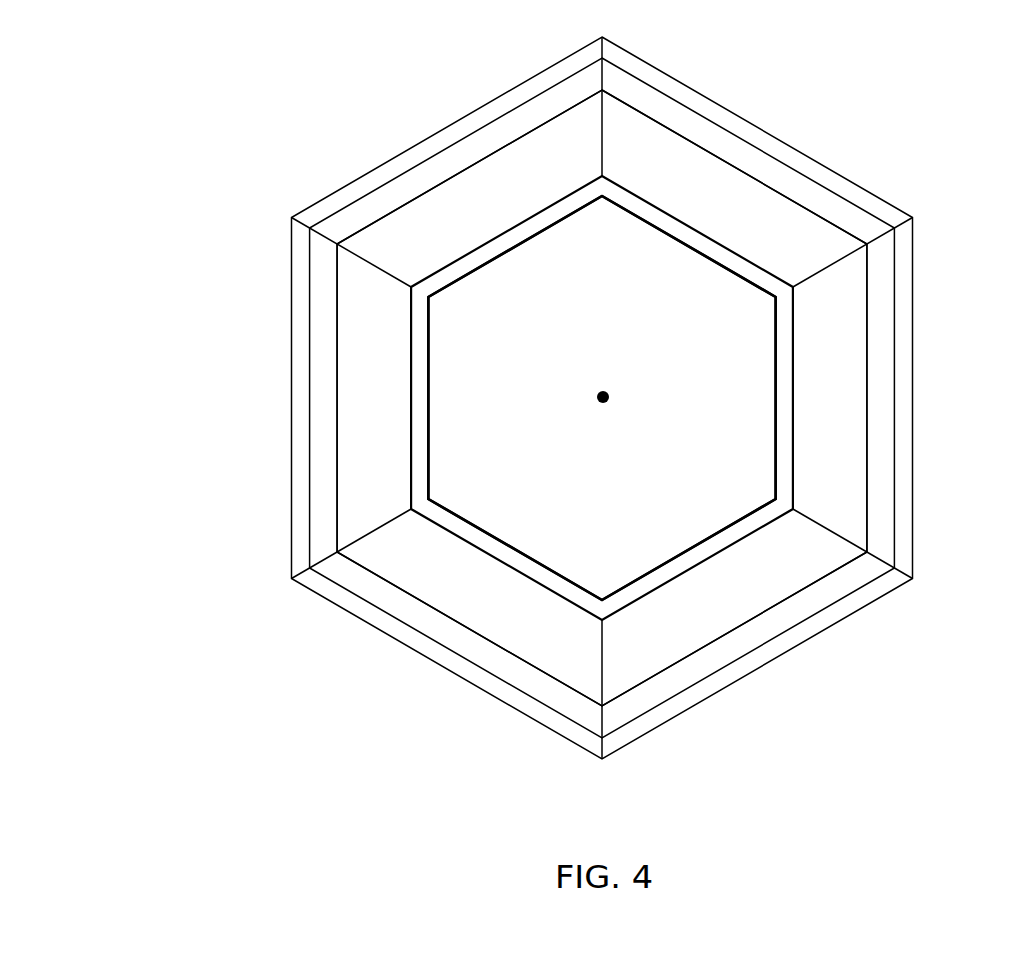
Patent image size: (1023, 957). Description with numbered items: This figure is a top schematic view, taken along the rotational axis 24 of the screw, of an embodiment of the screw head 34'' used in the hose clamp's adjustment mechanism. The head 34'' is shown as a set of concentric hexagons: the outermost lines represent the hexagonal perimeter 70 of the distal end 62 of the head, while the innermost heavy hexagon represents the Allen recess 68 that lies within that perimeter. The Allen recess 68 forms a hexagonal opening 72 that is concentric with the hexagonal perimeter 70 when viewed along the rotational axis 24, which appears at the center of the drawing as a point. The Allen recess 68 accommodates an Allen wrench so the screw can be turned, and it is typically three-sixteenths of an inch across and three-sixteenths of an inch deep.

The head 34'' is at (591, 398).
The perimeter 70 is at (410, 385).
The Allen recess 68 is at (480, 505).
The hexagonal opening 72 is at (722, 361).
The distal end 62 is at (718, 547).
The axis of rotation 24 is at (605, 402).